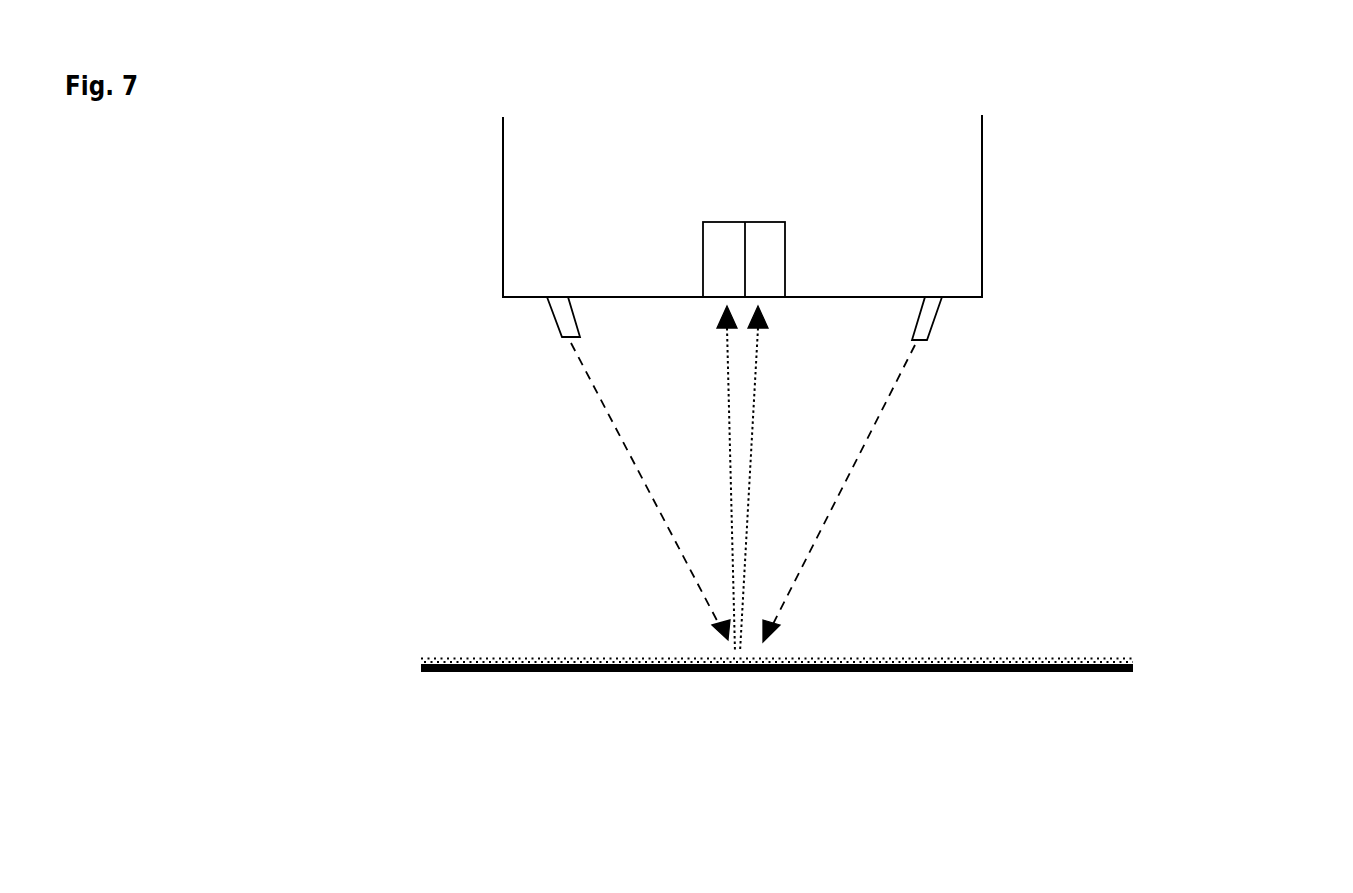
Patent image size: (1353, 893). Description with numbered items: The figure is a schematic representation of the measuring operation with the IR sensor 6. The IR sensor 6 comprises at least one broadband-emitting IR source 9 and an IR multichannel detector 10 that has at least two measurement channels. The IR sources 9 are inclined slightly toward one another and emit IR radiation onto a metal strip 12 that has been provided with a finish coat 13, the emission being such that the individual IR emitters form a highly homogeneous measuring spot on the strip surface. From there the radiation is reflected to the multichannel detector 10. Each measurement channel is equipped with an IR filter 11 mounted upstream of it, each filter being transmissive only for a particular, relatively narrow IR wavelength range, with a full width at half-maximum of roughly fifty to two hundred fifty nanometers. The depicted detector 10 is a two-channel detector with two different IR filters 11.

The IR sensor 6 is at (480, 223).
The IR source 9 is at (927, 327).
The IR multichannel detector 10 is at (760, 218).
The IR filter 11 is at (922, 445).
The metal strip 12 is at (1115, 678).
The finish coat 13 is at (1130, 650).